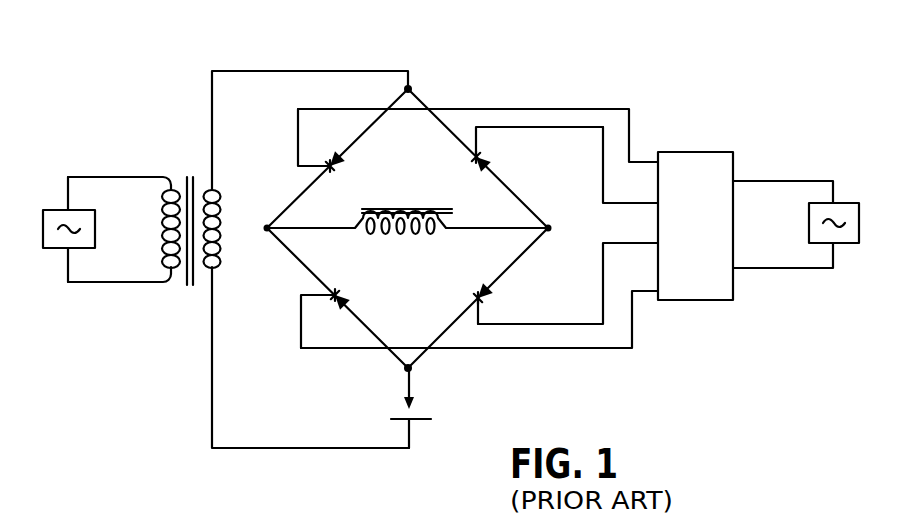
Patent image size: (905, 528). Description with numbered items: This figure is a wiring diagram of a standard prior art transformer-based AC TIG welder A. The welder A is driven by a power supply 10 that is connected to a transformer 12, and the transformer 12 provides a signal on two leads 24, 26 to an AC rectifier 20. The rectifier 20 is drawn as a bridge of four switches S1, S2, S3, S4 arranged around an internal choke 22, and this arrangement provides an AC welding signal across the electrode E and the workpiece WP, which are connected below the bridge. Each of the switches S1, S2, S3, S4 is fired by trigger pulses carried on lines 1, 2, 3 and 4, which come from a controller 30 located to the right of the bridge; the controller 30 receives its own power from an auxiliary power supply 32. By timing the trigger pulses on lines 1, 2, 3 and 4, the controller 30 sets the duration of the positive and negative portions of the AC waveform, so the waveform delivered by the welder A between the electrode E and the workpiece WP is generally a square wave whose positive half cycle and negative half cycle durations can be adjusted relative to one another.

The welder A is at (628, 57).
The power supply 10 is at (50, 208).
The transformer 12 is at (188, 170).
The AC rectifier 20 is at (436, 73).
The internal choke 22 is at (393, 233).
The lead 24 is at (277, 71).
The lead 26 is at (301, 449).
The controller 30 is at (700, 152).
The auxiliary power supply 32 is at (847, 203).
The switch S1 is at (321, 140).
The switch S2 is at (498, 303).
The switch S3 is at (537, 149).
The switch S4 is at (325, 318).
The line 1 is at (630, 128).
The line 2 is at (603, 254).
The line 3 is at (603, 156).
The line 4 is at (615, 347).
The electrode E is at (420, 405).
The workpiece WP is at (418, 421).